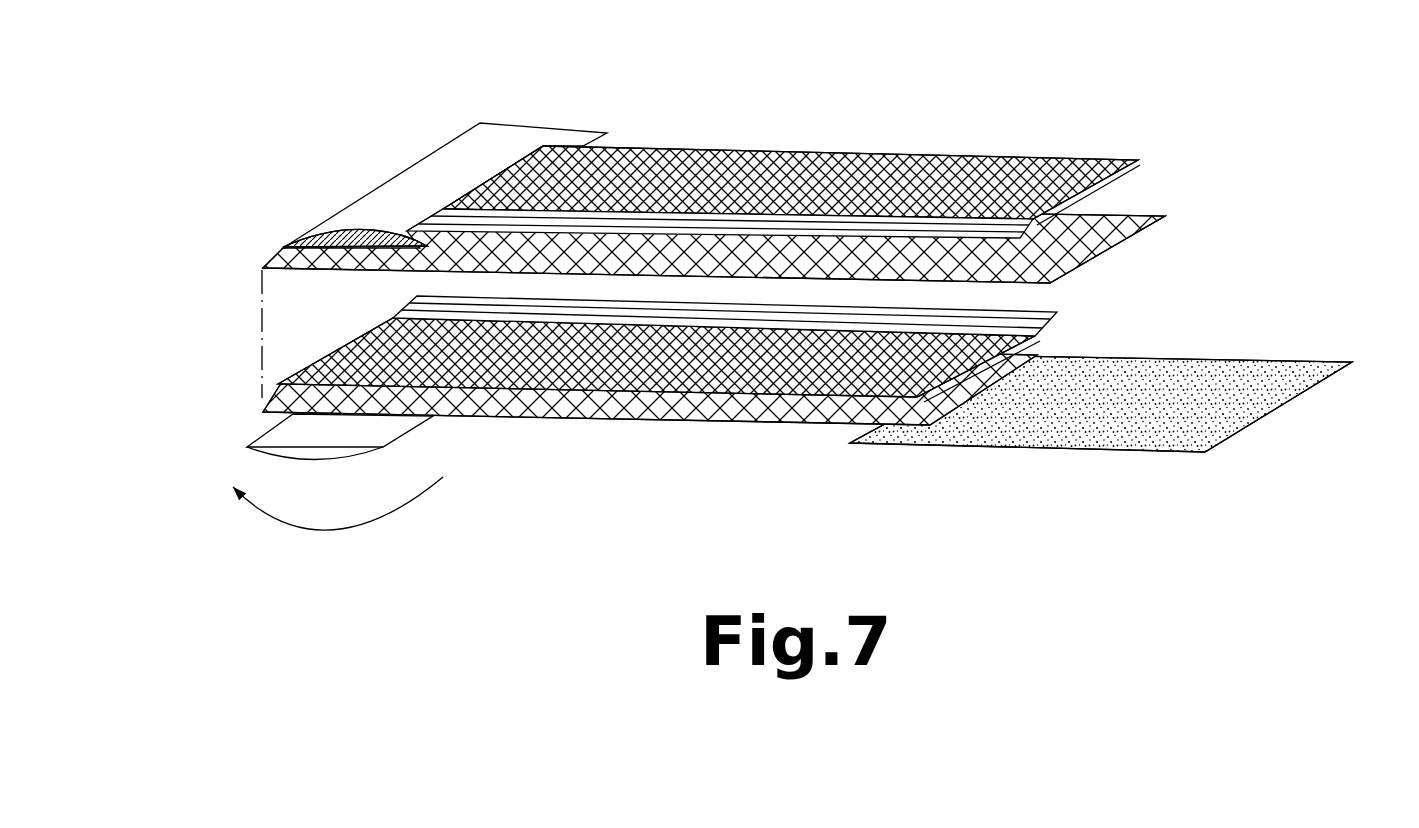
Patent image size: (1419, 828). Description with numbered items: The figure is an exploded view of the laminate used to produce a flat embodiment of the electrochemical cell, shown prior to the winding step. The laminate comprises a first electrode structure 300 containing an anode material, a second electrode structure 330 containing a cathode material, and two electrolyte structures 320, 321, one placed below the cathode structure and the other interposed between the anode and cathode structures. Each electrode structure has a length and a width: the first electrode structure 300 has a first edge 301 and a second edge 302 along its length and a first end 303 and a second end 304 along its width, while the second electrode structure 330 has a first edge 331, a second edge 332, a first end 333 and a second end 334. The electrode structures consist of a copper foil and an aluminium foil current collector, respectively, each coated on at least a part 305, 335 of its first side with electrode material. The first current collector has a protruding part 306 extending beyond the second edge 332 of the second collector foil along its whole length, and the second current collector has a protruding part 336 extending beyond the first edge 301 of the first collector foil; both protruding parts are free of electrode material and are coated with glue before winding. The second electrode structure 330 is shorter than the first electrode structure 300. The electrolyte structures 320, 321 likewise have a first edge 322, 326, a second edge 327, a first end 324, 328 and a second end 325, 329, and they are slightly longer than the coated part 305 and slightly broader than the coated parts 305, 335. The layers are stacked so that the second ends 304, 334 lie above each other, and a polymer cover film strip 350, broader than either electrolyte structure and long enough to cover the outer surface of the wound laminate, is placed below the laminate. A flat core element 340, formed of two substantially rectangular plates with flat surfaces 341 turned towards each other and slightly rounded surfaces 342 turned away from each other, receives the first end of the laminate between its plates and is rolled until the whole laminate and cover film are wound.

The first electrode structure 300 is at (656, 422).
The first edge 301 is at (503, 390).
The second edge 302 is at (725, 307).
The first end 303 is at (656, 387).
The second end 304 is at (1015, 345).
The coated part 305 is at (618, 355).
The protruding part 306 is at (715, 320).
The electrolyte structure 320 is at (583, 483).
The electrolyte structure 321 is at (1128, 178).
The first edge 322 is at (583, 431).
The first end 324 is at (583, 431).
The second end 325 is at (650, 436).
The first edge 326 is at (752, 209).
The second edge 327 is at (752, 194).
The first end 328 is at (268, 255).
The second end 329 is at (734, 194).
The second electrode structure 330 is at (790, 128).
The first edge 331 is at (457, 235).
The second edge 332 is at (790, 142).
The first end 333 is at (510, 160).
The second end 334 is at (1093, 228).
The coated part 335 is at (790, 128).
The protruding part 336 is at (713, 186).
The flat core element 340 is at (373, 278).
The flat surfaces 341 is at (320, 432).
The slightly rounded surfaces 342 is at (418, 140).
The polymer cover film strip 350 is at (1105, 400).